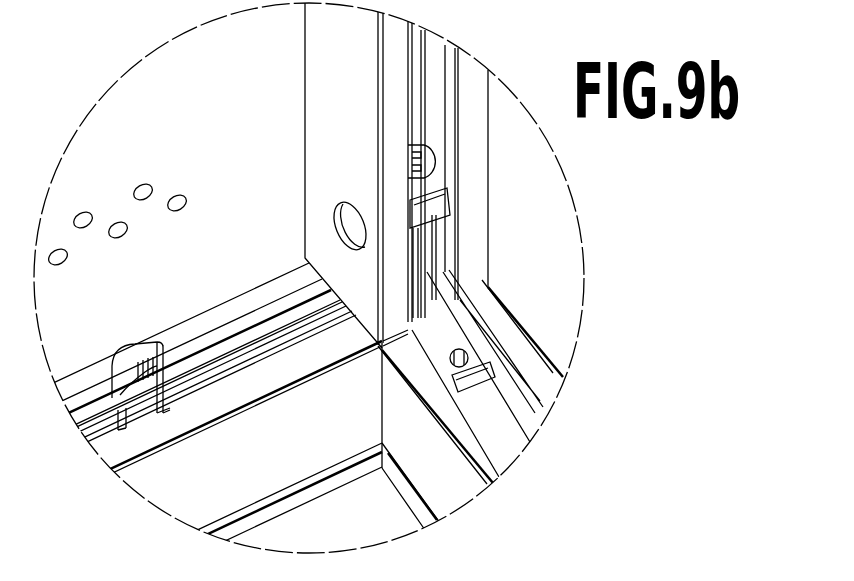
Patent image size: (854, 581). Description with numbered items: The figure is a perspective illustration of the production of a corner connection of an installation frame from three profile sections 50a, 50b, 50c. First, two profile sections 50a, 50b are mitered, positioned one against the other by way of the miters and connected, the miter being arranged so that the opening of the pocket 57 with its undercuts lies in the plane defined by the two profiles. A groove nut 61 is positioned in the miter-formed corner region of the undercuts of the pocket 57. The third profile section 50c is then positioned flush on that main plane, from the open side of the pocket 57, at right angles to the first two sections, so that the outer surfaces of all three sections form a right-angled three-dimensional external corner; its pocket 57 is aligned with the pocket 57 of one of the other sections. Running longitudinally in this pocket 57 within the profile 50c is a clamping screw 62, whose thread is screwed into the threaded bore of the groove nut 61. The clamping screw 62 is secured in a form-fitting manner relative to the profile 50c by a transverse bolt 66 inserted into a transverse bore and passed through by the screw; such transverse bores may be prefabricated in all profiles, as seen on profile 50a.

The profile section 50a is at (170, 495).
The profile section 50b is at (460, 490).
The profile section 50c is at (312, 58).
The pocket 57 is at (430, 92).
The groove nut 61 is at (447, 335).
The clamping screw 62 is at (435, 157).
The transverse bolt 66 is at (342, 213).